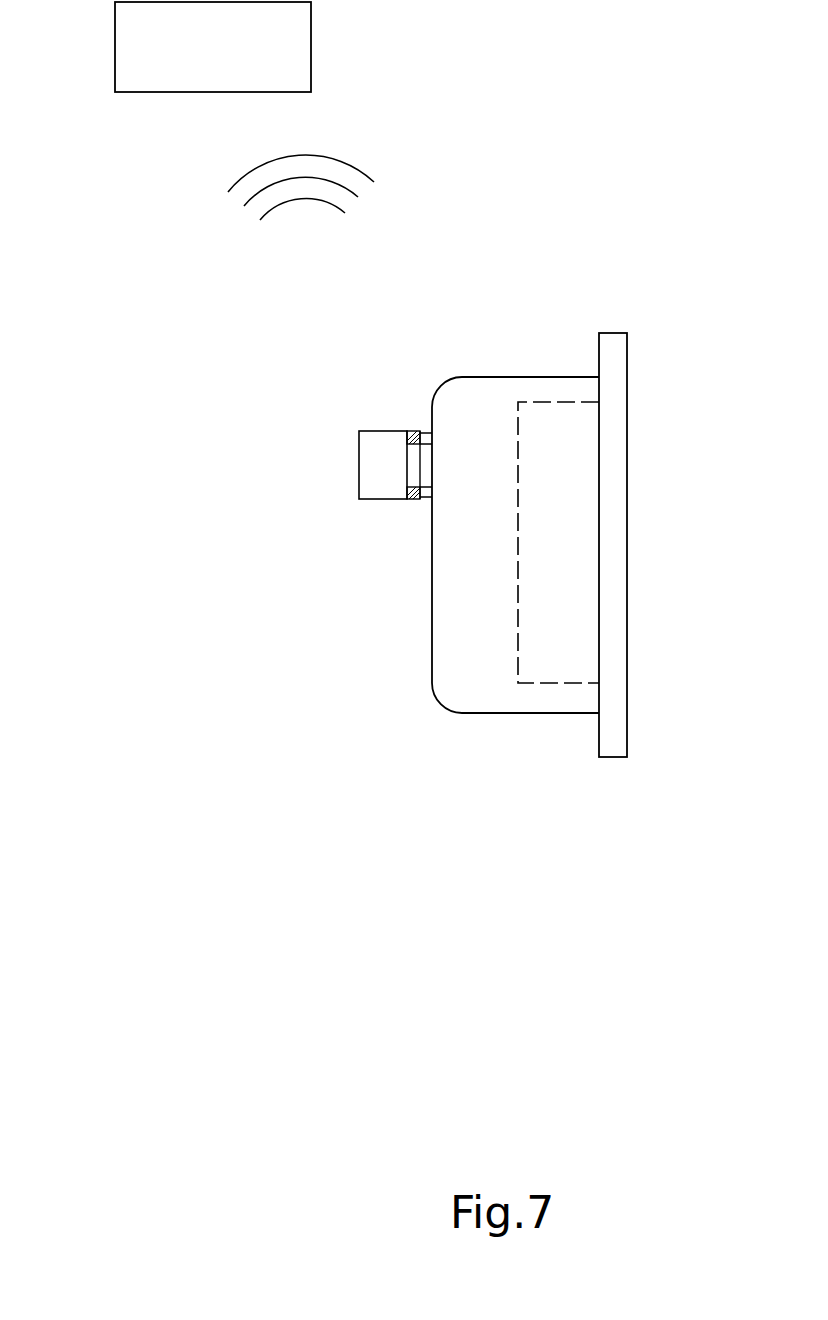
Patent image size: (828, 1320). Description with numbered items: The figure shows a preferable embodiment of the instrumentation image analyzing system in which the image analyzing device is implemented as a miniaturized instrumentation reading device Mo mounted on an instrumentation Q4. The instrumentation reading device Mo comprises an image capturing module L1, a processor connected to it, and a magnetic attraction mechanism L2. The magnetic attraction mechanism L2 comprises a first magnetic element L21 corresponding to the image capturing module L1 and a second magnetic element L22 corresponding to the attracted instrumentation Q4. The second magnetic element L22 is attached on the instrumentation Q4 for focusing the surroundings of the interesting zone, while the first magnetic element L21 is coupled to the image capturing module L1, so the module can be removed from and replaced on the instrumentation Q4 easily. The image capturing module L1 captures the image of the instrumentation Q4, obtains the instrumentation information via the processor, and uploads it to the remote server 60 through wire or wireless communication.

The remote server 60 is at (311, 41).
The instrumentation Q4 is at (529, 377).
The instrumentation reading device Mo is at (308, 513).
The image capturing module L1 is at (392, 481).
The magnetic attraction mechanism L2 is at (308, 548).
The first magnetic element L21 is at (410, 497).
The second magnetic element L22 is at (428, 499).